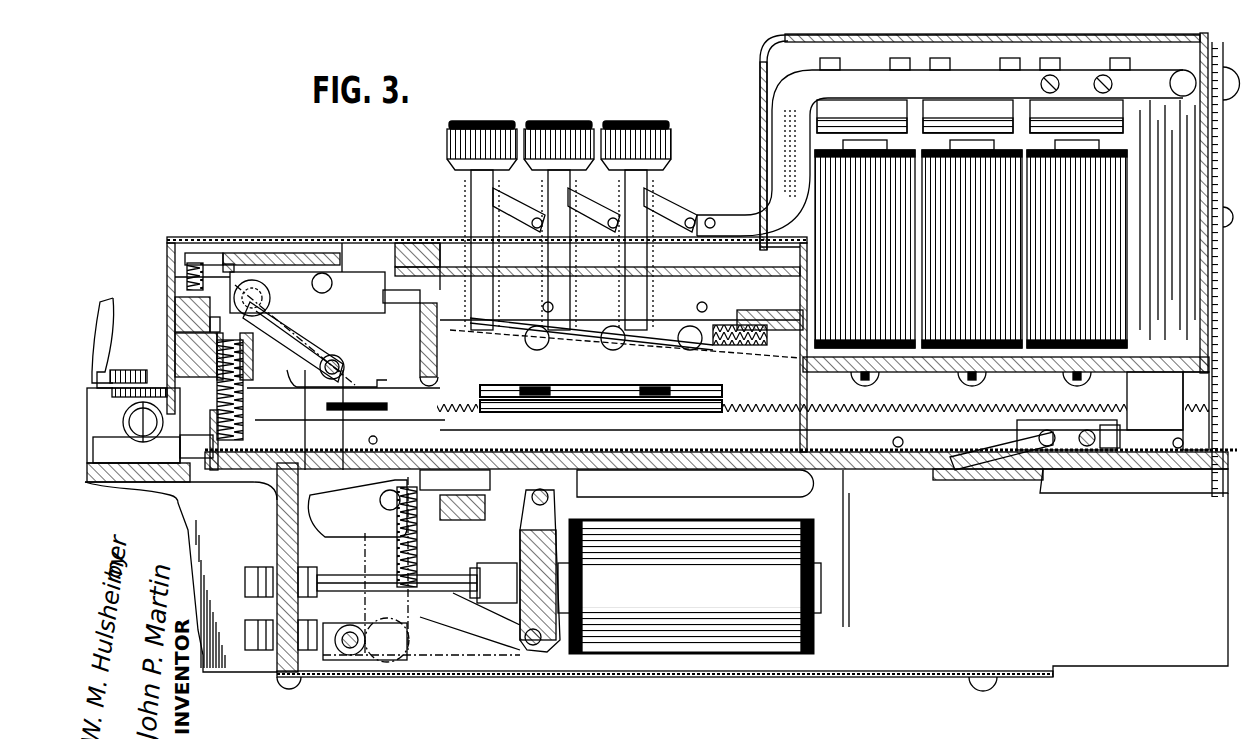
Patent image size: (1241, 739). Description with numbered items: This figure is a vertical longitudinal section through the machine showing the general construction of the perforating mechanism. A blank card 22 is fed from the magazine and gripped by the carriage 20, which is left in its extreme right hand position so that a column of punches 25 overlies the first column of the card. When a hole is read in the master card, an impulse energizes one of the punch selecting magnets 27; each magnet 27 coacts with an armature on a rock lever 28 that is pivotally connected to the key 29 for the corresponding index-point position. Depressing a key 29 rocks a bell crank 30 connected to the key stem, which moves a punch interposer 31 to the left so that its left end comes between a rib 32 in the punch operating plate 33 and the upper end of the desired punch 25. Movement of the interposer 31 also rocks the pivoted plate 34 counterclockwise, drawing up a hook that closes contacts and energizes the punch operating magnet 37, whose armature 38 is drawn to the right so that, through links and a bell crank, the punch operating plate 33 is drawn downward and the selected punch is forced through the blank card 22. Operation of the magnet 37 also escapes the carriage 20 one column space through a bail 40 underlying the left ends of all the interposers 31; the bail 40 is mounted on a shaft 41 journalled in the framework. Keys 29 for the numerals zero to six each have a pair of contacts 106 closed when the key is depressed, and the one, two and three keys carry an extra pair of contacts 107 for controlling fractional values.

The carriage 20 is at (883, 420).
The blank card 22 is at (883, 452).
The column of punches 25 is at (178, 350).
The punch selecting magnet 27 is at (1105, 212).
The rock lever 28 is at (786, 145).
The key 29 is at (521, 121).
The bell crank 30 is at (660, 330).
The punch interposer 31 is at (440, 287).
The rib 32 is at (229, 262).
The punch operating plate 33 is at (262, 254).
The pivoted plate 34 is at (420, 334).
The punch operating magnet 37 is at (689, 586).
The armature 38 is at (523, 557).
The bail 40 is at (310, 332).
The shaft 41 is at (338, 372).
The pair of contacts 106 is at (482, 395).
The extra pair of contacts 107 is at (482, 410).